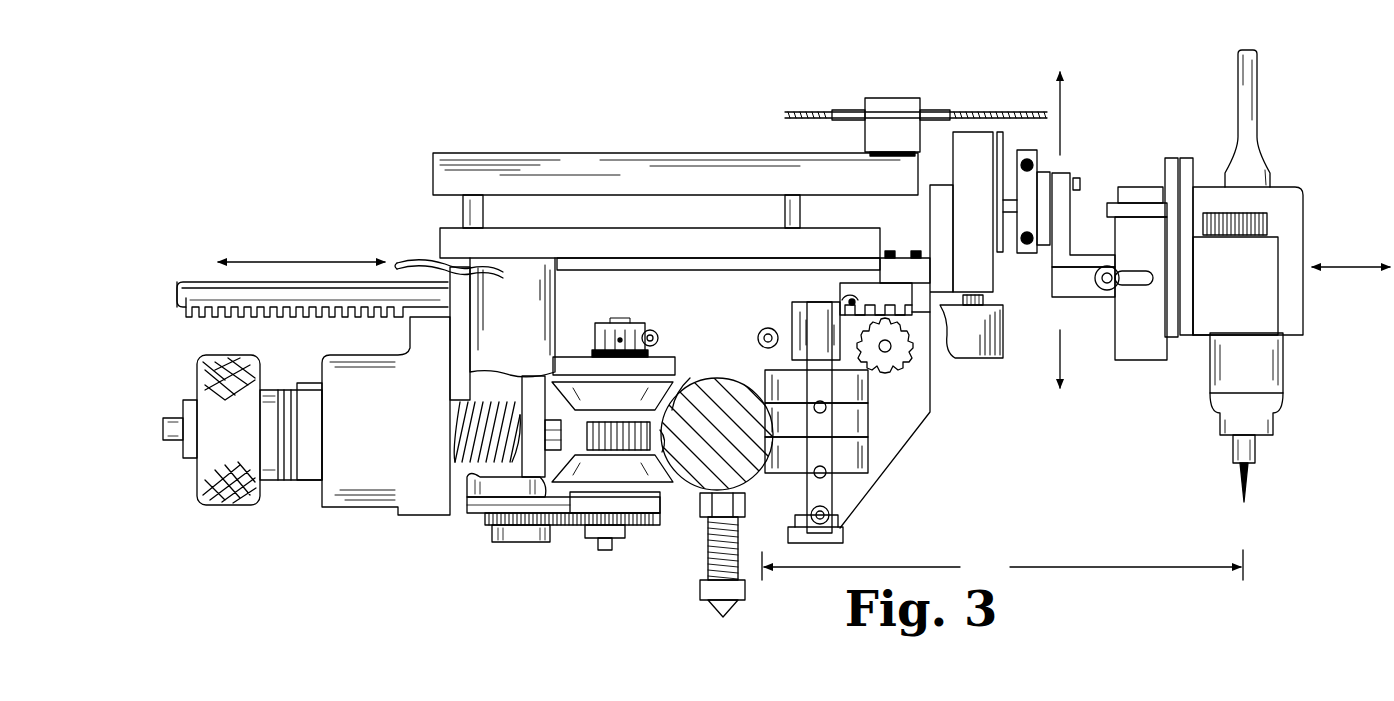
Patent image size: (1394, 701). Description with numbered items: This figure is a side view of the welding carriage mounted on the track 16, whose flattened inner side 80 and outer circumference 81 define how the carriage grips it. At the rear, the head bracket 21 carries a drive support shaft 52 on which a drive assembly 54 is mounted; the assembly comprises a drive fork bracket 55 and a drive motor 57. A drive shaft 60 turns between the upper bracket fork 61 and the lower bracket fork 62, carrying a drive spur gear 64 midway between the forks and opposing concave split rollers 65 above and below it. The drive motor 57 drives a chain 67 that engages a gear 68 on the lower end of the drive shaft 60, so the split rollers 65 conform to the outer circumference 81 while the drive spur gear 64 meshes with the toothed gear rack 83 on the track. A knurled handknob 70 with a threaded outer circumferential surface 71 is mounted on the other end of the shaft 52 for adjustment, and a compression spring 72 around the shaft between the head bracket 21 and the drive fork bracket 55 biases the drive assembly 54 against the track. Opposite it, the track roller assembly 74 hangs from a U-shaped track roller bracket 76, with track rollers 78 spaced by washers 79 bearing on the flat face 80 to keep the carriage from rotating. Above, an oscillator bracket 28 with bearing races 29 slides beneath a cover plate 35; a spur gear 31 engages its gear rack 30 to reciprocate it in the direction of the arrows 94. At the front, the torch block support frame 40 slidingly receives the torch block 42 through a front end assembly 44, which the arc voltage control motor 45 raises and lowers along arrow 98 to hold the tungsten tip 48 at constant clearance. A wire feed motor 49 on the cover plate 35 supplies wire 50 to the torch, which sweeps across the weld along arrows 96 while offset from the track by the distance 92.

The track 16 is at (750, 480).
The head bracket 21 is at (372, 495).
The oscillator bracket 28 is at (172, 272).
The bearing races 29 is at (200, 298).
The gear rack 30 is at (180, 290).
The spur gear 31 is at (920, 360).
The cover plate 35 is at (648, 158).
The torch block support frame 40 is at (995, 265).
The torch block 42 is at (1082, 160).
The front end assembly 44 is at (1306, 180).
The arc voltage control motor 45 is at (972, 360).
The tungsten tip 48 is at (1250, 482).
The wire feed motor 49 is at (898, 118).
The wire 50 is at (1003, 114).
The drive support shaft 52 is at (466, 500).
The drive assembly 54 is at (568, 580).
The drive fork bracket 55 is at (508, 390).
The drive motor 57 is at (520, 288).
The drive shaft 60 is at (630, 326).
The upper bracket fork 61 is at (665, 370).
The lower bracket fork 62 is at (668, 508).
The drive spur gear 64 is at (620, 428).
The concave split rollers 65 is at (686, 485).
The chain 67 is at (566, 520).
The gear 68 is at (602, 528).
The knurled handknob 70 is at (230, 505).
The threaded outer circumferential surface 71 is at (285, 481).
The compression spring 72 is at (462, 447).
The track roller assembly 74 is at (888, 488).
The track roller bracket 76 is at (830, 540).
The track rollers 78 is at (880, 468).
The washers 79 is at (900, 435).
The flattened inner side 80 is at (770, 380).
The outer circumference 81 is at (690, 372).
The toothed gear rack 83 is at (660, 445).
The offset distance 92 is at (1002, 565).
The arrows 94 is at (318, 262).
The arrows 96 is at (1350, 267).
The arrow 98 is at (1068, 112).